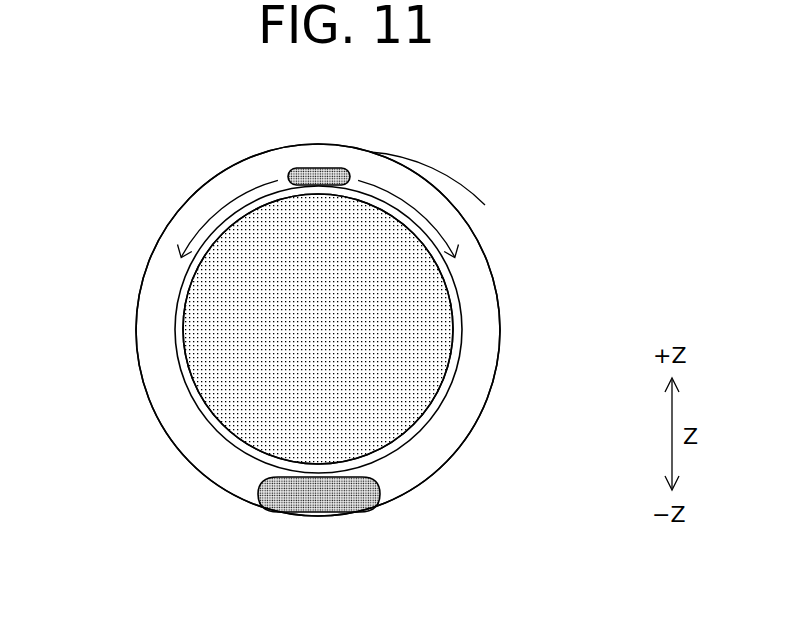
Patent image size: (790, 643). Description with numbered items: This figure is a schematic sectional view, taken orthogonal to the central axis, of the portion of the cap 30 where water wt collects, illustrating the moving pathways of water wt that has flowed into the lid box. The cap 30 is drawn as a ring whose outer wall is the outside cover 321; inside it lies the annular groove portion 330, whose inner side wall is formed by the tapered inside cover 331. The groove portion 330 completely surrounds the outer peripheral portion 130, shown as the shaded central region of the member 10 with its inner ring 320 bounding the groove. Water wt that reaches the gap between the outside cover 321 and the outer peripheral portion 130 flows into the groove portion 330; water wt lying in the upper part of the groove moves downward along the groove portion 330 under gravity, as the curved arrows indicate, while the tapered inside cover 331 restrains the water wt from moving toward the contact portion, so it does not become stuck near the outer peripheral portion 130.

The substrate 10 is at (377, 382).
The outer peripheral portion 130 is at (430, 332).
The cap 30 is at (368, 149).
The annular member 320 is at (168, 224).
The outside cover 321 is at (428, 181).
The groove portion 330 is at (447, 226).
The inside cover 331 is at (456, 283).
The water wt is at (317, 167).